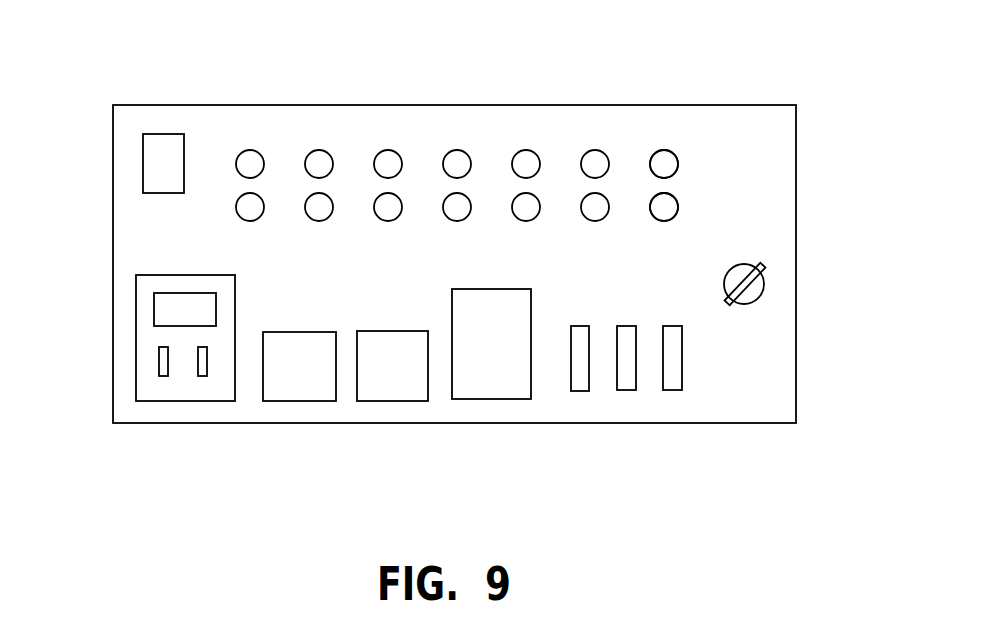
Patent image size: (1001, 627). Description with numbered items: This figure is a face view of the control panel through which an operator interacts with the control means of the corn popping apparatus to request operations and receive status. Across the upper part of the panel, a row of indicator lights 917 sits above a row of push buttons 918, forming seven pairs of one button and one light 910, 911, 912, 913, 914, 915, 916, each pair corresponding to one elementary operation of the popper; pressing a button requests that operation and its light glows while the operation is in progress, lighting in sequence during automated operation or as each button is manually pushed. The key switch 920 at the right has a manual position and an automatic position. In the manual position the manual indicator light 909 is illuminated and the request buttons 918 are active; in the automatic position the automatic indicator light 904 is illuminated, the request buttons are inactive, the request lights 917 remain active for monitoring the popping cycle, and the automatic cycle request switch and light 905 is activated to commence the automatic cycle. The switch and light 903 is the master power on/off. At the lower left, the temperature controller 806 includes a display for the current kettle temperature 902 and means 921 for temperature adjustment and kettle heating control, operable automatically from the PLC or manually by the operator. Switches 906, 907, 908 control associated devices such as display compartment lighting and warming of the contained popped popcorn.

The temperature controller 806 is at (160, 401).
The display for the current kettle temperature 902 is at (154, 303).
The switch and light 903 is at (292, 401).
The automatic indicator light 904 is at (387, 401).
The automatic cycle request switch and light 905 is at (475, 399).
The switch 906 is at (580, 391).
The switch 907 is at (627, 391).
The switch 908 is at (673, 391).
The manual indicator light 909 is at (143, 147).
The button and light pair 910 is at (244, 150).
The button and light pair 911 is at (313, 150).
The button and light pair 912 is at (382, 150).
The button and light pair 913 is at (451, 150).
The button and light pair 914 is at (520, 150).
The button and light pair 915 is at (589, 150).
The button and light pair 916 is at (658, 150).
The row of indicator lights 917 is at (678, 161).
The row of push buttons 918 is at (678, 205).
The key switch 920 is at (764, 282).
The means for temperature adjustment and kettle heating control 921 is at (159, 360).